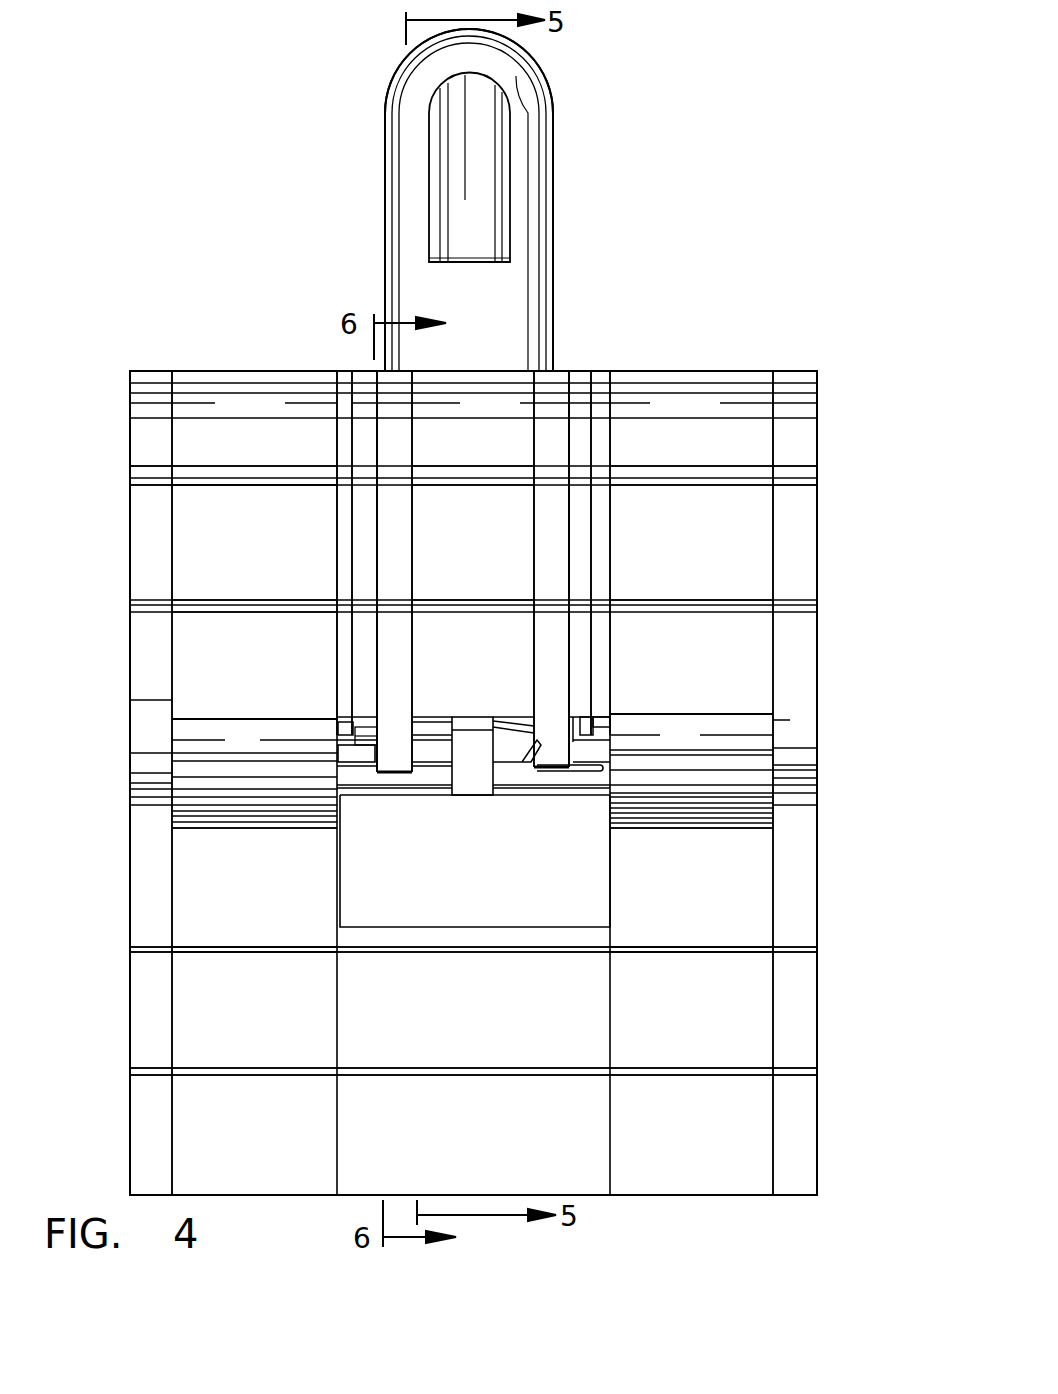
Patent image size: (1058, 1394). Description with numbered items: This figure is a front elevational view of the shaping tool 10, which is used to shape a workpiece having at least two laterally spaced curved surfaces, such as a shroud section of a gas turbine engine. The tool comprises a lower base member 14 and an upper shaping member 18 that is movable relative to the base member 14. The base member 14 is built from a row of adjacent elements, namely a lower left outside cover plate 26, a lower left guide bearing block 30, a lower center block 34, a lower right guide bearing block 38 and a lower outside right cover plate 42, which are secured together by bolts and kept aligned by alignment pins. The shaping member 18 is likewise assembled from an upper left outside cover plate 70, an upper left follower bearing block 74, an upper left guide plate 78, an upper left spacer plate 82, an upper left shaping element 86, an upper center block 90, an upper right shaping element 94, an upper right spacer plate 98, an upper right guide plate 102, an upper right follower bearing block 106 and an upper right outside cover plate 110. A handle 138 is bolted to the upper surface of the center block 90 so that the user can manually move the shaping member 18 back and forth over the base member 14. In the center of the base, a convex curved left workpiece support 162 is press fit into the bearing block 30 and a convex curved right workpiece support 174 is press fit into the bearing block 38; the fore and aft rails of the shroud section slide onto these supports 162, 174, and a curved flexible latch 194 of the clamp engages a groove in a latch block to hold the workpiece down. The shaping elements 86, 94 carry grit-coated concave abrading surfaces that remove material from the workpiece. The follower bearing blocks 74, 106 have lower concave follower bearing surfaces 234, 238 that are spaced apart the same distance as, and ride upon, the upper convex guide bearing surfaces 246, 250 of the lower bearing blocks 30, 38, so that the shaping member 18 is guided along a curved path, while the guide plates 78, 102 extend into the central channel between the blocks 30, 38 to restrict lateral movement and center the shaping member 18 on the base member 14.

The shaping tool 10 is at (712, 54).
The lower base member 14 is at (724, 1215).
The upper shaping member 18 is at (684, 345).
The lower left outside cover plate 26 is at (155, 893).
The lower left guide bearing block 30 is at (254, 890).
The lower center block 34 is at (473, 1011).
The lower right guide bearing block 38 is at (691, 890).
The lower outside right cover plate 42 is at (805, 878).
The upper left outside cover plate 70 is at (141, 521).
The upper left follower bearing block 74 is at (254, 548).
The upper left guide plate 78 is at (349, 553).
The upper left spacer plate 82 is at (365, 553).
The upper left shaping element 86 is at (398, 520).
The upper center block 90 is at (473, 533).
The upper right shaping element 94 is at (560, 578).
The upper right spacer plate 98 is at (583, 552).
The upper right guide plate 102 is at (603, 530).
The upper right follower bearing block 106 is at (691, 533).
The upper right outside cover plate 110 is at (797, 521).
The handle 138 is at (469, 147).
The convex curved left workpiece support 162 is at (350, 795).
The convex curved right workpiece support 174 is at (590, 778).
The latch 194 is at (473, 778).
The lower concave curved follower bearing surface 234 is at (305, 716).
The lower concave curved follower bearing surface 238 is at (653, 716).
The upper convex curved guide bearing surface 246 is at (268, 728).
The upper convex curved guide bearing surface 250 is at (680, 724).